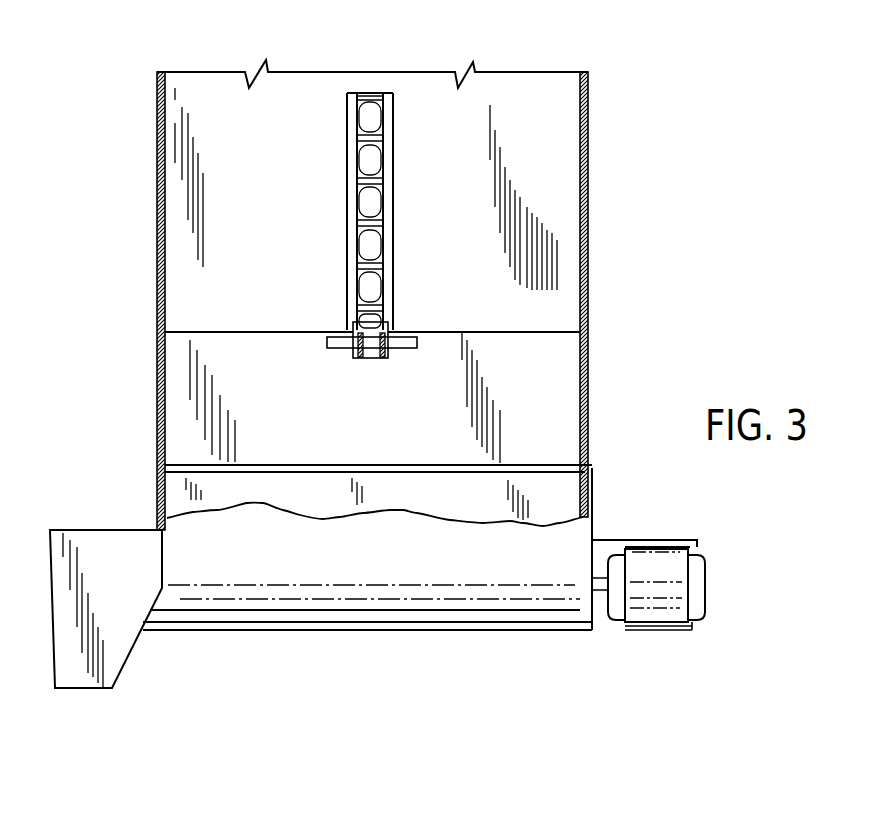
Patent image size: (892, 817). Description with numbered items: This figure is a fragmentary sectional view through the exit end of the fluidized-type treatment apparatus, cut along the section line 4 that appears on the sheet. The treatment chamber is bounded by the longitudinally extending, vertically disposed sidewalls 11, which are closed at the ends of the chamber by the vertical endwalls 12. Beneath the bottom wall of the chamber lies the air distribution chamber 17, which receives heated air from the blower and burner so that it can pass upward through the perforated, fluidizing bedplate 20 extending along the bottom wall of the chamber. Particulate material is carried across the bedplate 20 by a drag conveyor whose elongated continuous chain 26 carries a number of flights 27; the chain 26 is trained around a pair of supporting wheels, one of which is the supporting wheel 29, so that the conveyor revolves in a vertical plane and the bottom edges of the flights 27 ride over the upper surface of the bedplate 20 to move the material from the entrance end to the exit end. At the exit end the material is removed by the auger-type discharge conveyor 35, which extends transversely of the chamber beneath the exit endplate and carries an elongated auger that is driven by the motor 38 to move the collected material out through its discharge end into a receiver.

The section line 4- 4 is at (557, 702).
The sidewalls 11 is at (156, 203).
The endwalls 12 is at (262, 212).
The air distribution chamber 17 is at (177, 502).
The bedplate 20 is at (565, 481).
The chain 26 is at (395, 328).
The flights 27 is at (563, 410).
The supporting wheel 29 is at (393, 181).
The auger-type conveyor 35 is at (330, 613).
The motor 38 is at (688, 625).